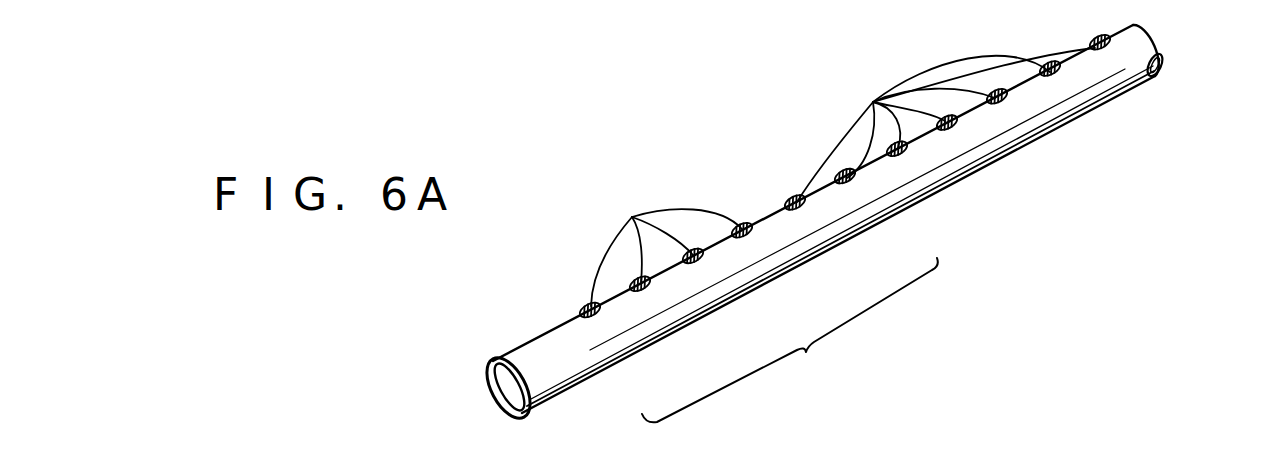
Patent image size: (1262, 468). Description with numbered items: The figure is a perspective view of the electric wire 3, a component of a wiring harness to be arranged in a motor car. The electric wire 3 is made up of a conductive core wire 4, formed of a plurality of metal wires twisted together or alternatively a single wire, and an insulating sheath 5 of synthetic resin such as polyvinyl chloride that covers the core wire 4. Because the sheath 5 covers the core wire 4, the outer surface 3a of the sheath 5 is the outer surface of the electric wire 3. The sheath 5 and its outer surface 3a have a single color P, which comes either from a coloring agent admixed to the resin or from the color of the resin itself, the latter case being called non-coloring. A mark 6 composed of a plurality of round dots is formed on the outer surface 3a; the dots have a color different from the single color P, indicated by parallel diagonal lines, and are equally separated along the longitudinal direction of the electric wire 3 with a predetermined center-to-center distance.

The electric wire 3 is at (813, 160).
The outer surface 3a is at (557, 395).
The core wire 4 is at (498, 386).
The sheath 5 is at (503, 413).
The mark 6 is at (790, 340).
The single color P is at (1157, 78).